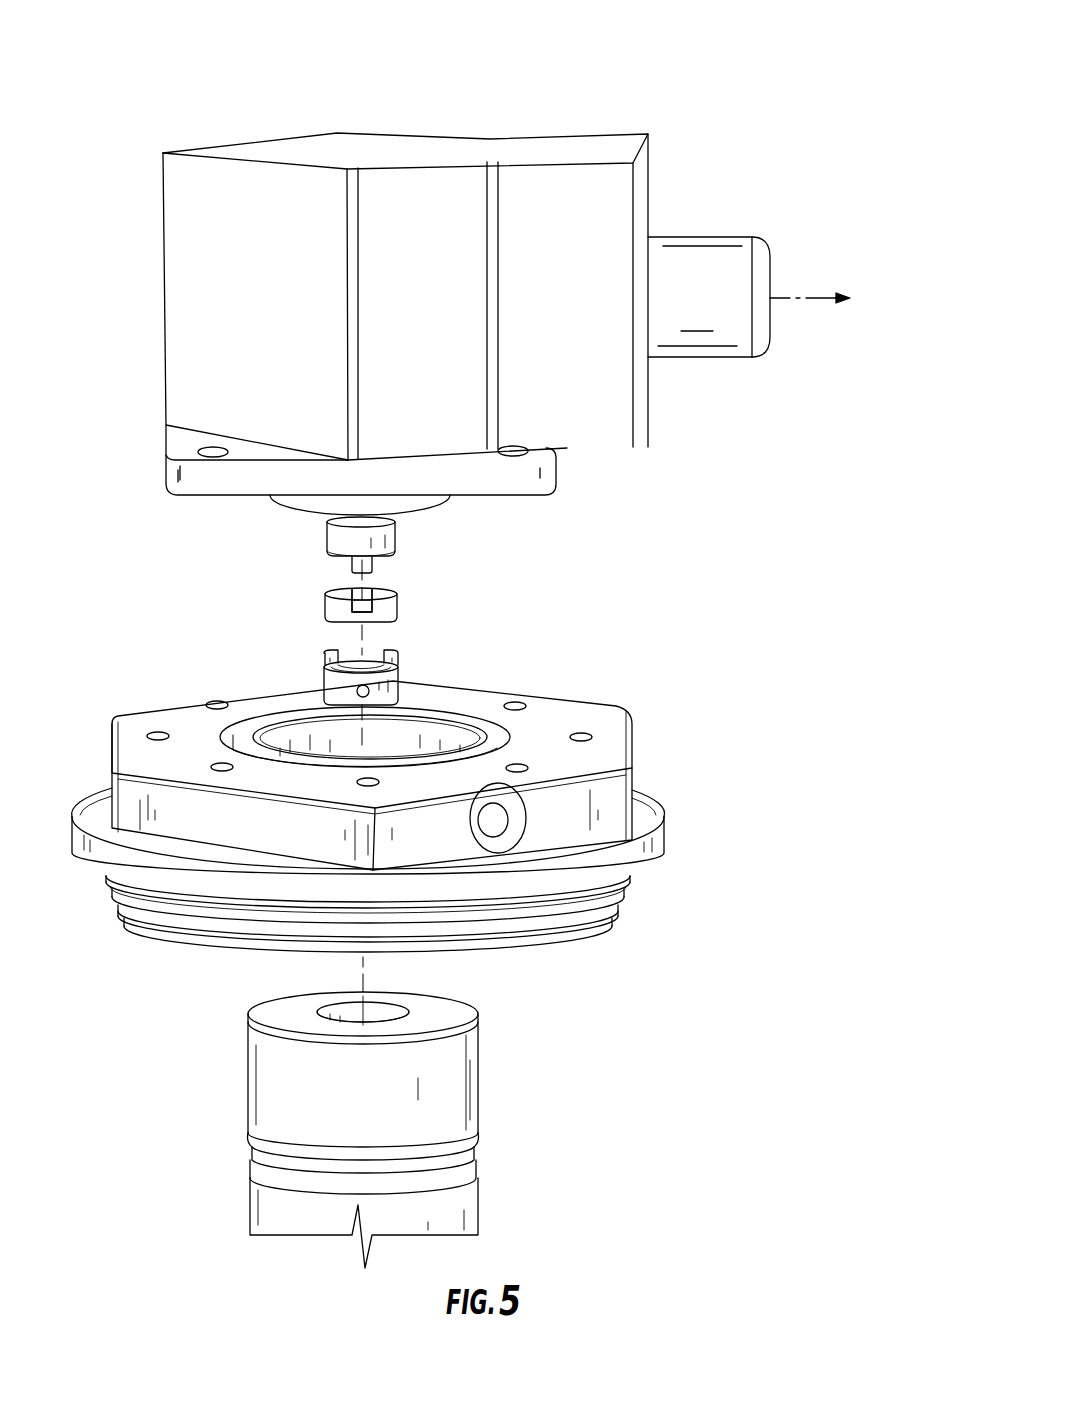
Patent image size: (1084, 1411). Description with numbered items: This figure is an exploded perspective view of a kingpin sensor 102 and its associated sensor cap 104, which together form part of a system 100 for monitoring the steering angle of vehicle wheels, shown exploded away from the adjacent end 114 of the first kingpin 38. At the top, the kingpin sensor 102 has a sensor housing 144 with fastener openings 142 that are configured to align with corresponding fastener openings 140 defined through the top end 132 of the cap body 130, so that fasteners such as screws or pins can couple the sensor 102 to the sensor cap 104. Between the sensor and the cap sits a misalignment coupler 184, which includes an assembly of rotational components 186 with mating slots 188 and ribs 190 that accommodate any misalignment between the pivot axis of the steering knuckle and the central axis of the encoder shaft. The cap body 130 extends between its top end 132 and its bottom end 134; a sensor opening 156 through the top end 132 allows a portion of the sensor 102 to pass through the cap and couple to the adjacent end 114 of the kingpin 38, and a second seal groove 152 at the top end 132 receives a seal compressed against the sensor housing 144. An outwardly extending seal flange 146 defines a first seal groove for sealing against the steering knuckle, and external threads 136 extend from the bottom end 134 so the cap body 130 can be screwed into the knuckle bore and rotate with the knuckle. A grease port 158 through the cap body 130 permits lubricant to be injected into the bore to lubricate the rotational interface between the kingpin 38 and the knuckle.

The system 100 is at (140, 78).
The kingpin sensor 102 is at (125, 209).
The sensor housing 144 is at (166, 330).
The fastener openings 142 is at (200, 451).
The misalignment coupler 184 is at (268, 573).
The rotational components 186 is at (398, 602).
The mating slots 188 is at (354, 597).
The ribs 190 is at (334, 556).
The sensor cap 104 is at (77, 745).
The cap body 130 is at (633, 736).
The top end 132 is at (493, 688).
The fastener openings 140 is at (212, 703).
The second seal groove 152 is at (258, 718).
The sensor opening 156 is at (412, 750).
The seal flange 146 is at (73, 816).
The grease port 158 is at (500, 822).
The external threads 136 is at (118, 910).
The bottom end 134 is at (583, 928).
The adjacent end 114 is at (457, 1010).
The first kingpin 38 is at (247, 1100).